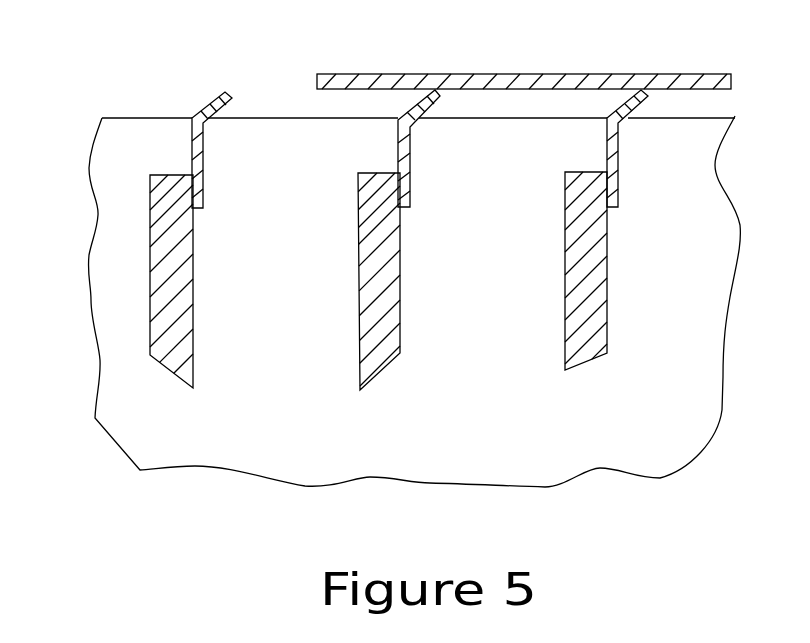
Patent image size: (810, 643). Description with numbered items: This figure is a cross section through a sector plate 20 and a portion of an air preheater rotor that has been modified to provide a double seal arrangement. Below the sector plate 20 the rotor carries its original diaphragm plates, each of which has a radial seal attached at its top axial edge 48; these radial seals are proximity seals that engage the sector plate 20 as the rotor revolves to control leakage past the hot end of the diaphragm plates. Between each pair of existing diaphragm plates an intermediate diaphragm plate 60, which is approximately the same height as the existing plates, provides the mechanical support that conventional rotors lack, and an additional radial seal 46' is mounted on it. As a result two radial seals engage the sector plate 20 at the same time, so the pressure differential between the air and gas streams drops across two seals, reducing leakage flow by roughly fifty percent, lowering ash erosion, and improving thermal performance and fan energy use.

The sector plate 20 is at (485, 74).
The additional radial seal 46' is at (447, 148).
The top axial edge 48 is at (150, 175).
The intermediate diaphragm plate 60 is at (400, 292).